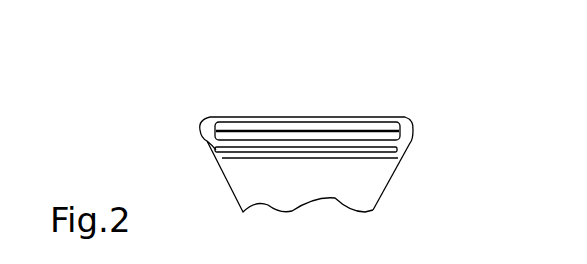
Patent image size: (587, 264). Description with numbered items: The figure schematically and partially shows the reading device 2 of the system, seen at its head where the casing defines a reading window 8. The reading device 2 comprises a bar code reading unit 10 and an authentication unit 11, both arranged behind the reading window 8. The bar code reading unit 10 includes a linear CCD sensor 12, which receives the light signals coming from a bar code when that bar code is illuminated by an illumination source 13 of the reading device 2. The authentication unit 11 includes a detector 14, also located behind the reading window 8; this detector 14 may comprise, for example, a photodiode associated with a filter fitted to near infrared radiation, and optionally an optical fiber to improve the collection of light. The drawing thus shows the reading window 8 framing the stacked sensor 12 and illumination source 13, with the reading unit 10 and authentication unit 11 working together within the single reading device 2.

The reading device 2 is at (398, 187).
The reading window 8 is at (206, 120).
The bar code reading unit 10 is at (408, 117).
The authentication unit 11 is at (413, 140).
The linear CCD sensor 12 is at (257, 120).
The illumination source 13 is at (224, 155).
The detector 14 is at (207, 141).